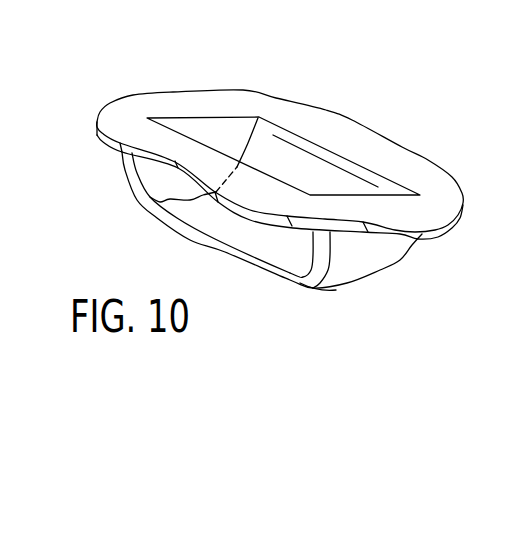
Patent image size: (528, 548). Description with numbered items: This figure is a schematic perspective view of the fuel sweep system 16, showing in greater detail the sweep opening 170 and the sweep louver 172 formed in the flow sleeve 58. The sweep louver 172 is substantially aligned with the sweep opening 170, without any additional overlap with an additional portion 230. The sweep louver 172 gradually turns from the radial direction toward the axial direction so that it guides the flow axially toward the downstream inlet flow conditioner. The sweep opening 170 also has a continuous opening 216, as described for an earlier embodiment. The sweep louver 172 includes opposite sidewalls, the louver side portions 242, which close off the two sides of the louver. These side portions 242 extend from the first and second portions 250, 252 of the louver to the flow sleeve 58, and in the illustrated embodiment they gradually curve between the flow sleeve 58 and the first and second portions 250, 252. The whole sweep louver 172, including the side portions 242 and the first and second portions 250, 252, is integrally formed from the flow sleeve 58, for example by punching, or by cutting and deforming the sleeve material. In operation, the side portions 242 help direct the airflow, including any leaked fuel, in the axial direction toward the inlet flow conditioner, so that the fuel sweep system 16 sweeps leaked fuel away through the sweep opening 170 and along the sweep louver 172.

The fuel sweep system 16 is at (449, 273).
The flow sleeve 58 is at (233, 98).
The sweep opening 170 is at (318, 143).
The sweep louver 172 is at (330, 290).
The continuous opening 216 is at (382, 170).
The additional portion 230 is at (127, 110).
The louver side portions 242 is at (123, 168).
The first portion 250 is at (402, 254).
The second portion 252 is at (313, 290).